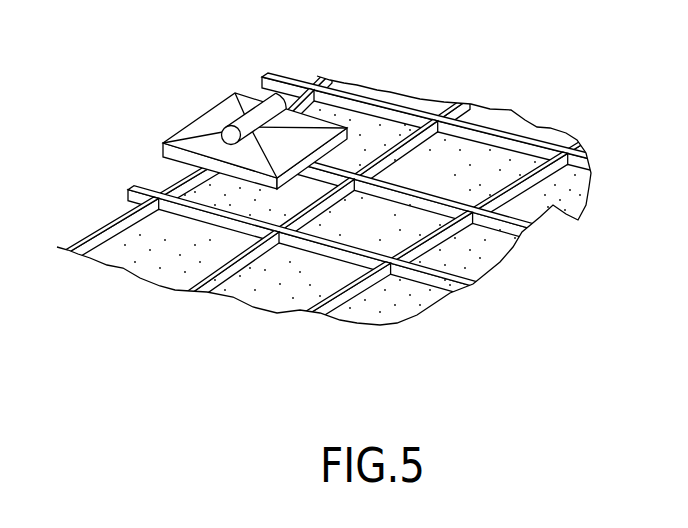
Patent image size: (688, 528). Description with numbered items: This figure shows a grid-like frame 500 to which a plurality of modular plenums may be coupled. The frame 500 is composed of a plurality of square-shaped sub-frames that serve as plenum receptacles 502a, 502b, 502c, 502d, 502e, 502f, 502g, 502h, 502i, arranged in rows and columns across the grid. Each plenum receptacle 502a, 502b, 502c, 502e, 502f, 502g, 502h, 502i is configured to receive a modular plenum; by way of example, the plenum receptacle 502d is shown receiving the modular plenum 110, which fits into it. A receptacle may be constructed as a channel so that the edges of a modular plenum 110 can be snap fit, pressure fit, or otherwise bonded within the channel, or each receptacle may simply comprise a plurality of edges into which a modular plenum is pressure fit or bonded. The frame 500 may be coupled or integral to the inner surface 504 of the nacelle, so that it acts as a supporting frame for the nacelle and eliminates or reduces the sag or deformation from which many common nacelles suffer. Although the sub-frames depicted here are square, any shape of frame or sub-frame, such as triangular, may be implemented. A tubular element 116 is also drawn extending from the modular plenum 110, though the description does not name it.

The frame 500 is at (263, 231).
The plenum receptacle 502a is at (156, 270).
The plenum receptacle 502b is at (270, 306).
The plenum receptacle 502c is at (394, 318).
The plenum receptacle 502d is at (207, 187).
The plenum receptacle 502e is at (391, 226).
The plenum receptacle 502f is at (497, 257).
The plenum receptacle 502g is at (381, 128).
The plenum receptacle 502h is at (457, 153).
The plenum receptacle 502i is at (573, 202).
The inner surface 504 is at (316, 270).
The modular plenum 110 is at (204, 115).
The conduit 116 is at (272, 93).